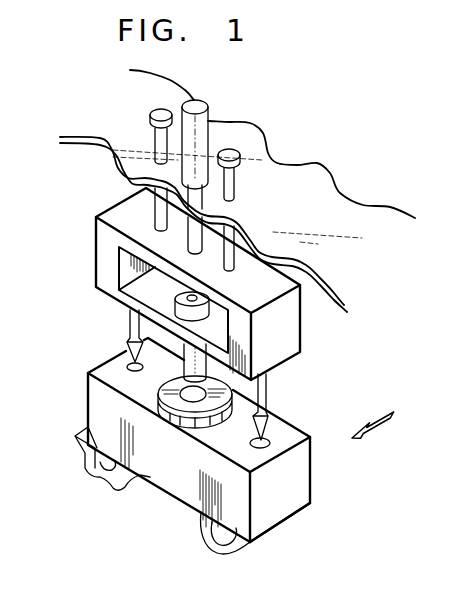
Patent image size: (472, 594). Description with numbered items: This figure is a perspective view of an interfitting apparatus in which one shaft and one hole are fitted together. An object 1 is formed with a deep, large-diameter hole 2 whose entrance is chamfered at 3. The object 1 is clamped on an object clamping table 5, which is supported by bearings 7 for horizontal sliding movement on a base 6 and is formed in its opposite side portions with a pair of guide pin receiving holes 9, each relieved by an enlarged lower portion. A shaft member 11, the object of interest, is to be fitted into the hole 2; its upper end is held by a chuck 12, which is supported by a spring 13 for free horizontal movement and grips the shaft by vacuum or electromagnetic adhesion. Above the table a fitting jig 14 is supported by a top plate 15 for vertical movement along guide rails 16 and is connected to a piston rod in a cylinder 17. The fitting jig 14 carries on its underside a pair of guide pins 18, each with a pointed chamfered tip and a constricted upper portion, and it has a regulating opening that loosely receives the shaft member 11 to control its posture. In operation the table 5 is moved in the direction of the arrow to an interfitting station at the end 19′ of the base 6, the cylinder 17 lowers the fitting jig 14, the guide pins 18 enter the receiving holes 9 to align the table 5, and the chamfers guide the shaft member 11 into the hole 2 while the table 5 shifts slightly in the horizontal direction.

The object 1 is at (219, 460).
The hole 2 is at (200, 403).
The chamfer 3 is at (182, 413).
The object clamping table 5 is at (219, 460).
The base 6 is at (283, 521).
The bearings 7 is at (237, 546).
The guide pin receiving holes 9 is at (270, 440).
The shaft member 11 is at (184, 356).
The chuck 12 is at (176, 304).
The spring 13 is at (192, 296).
The fitting jig 14 is at (300, 332).
The top plate 15 is at (330, 183).
The guide rails 16 is at (236, 185).
The cylinder 17 is at (203, 128).
The guide pins 18 is at (266, 390).
The end of the base 19′ is at (310, 503).